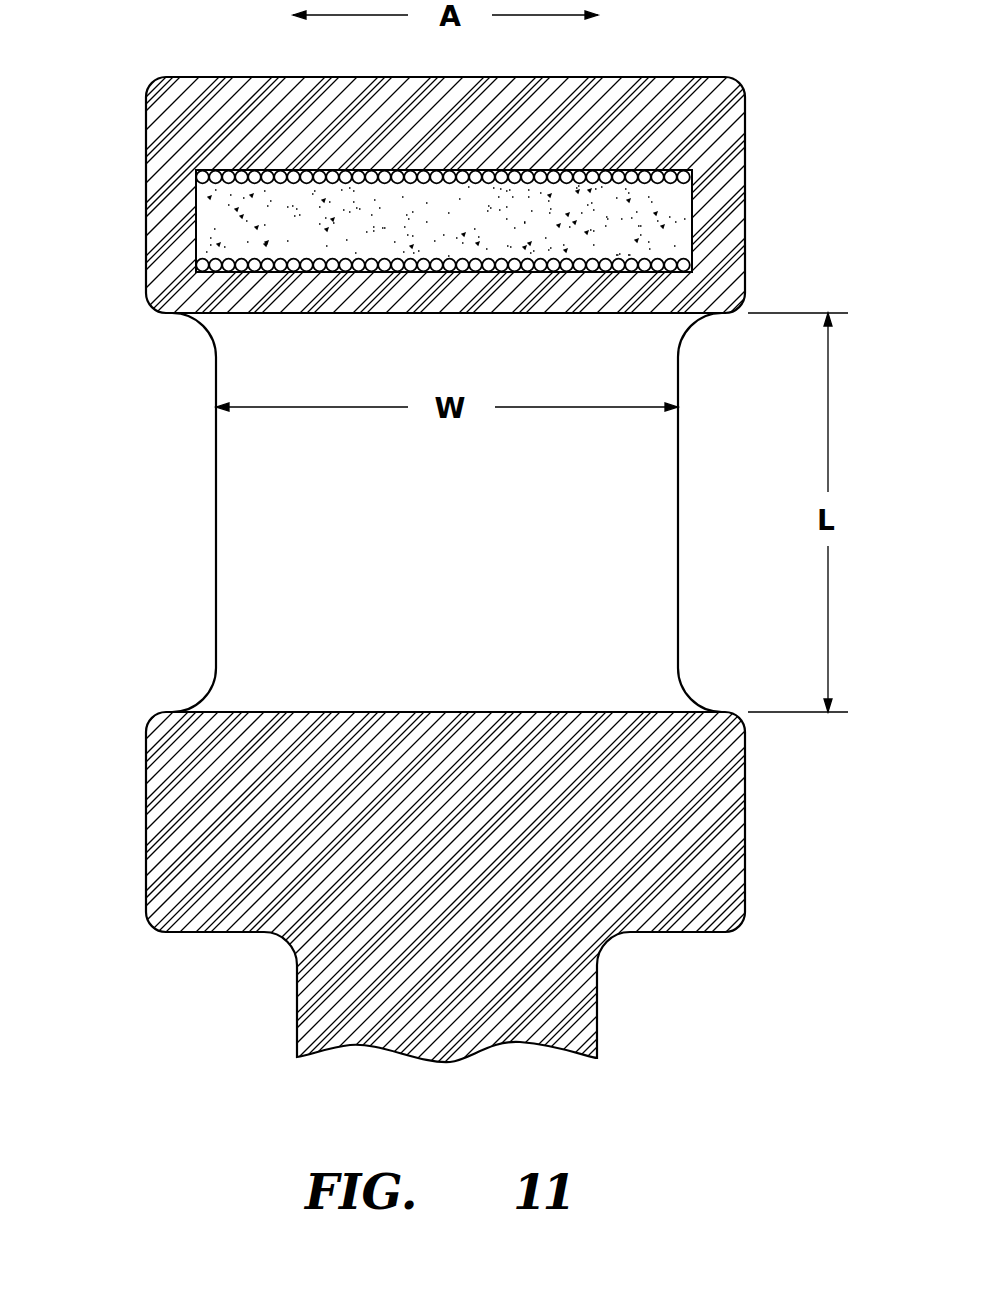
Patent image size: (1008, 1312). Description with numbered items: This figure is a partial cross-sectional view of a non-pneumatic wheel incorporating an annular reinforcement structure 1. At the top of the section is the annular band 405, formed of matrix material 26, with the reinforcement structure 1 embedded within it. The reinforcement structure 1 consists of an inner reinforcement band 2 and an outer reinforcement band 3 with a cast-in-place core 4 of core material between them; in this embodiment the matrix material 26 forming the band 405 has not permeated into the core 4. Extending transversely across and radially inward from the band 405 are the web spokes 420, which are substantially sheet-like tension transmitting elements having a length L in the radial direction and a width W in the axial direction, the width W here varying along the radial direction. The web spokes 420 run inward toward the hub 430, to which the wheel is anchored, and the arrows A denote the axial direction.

The annular reinforcement structure 1 is at (554, 152).
The inner reinforcement band 2 is at (708, 267).
The outer reinforcement band 3 is at (708, 178).
The cast-in-place core 4 is at (708, 226).
The matrix material 26 is at (730, 104).
The annular band 405 is at (175, 215).
The web spokes 420 is at (680, 490).
The hub 430 is at (745, 852).